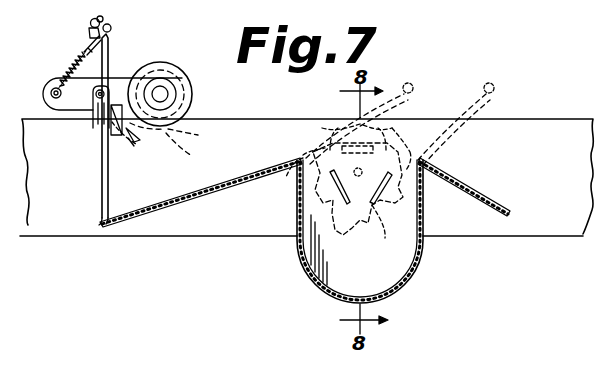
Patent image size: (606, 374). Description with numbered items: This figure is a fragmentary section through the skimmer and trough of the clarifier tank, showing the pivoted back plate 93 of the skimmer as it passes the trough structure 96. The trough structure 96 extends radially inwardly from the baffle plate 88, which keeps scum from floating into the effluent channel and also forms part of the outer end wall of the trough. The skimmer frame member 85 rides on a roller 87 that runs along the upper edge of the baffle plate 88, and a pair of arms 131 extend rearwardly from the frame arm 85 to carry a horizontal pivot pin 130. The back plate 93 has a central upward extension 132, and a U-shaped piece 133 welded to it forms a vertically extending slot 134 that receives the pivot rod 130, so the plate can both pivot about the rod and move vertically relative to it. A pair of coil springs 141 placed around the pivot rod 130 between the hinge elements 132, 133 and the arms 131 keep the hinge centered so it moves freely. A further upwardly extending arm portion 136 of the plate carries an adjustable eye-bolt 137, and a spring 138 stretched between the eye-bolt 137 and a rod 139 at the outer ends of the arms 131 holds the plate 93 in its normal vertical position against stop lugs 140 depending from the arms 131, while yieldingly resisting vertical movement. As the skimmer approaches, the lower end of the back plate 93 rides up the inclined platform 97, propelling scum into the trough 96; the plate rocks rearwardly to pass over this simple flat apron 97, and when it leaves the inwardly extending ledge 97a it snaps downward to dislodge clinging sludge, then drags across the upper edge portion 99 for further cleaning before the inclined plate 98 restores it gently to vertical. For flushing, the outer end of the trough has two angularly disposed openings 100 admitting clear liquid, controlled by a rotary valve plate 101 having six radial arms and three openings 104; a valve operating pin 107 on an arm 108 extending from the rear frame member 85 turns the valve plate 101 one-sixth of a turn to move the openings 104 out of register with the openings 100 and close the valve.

The radially extending member 85 is at (163, 86).
The roller 87 is at (145, 62).
The baffle plate 88 is at (242, 118).
The back plate 93 is at (109, 188).
The trough structure 96 is at (412, 285).
The inclined platform 97 is at (211, 200).
The inwardly extending ledge 97a is at (296, 182).
The inclined plate 98 is at (478, 198).
The upper edge portion 99 is at (426, 165).
The angularly disposed openings 100 is at (358, 192).
The rotary valve plate 101 is at (391, 212).
The openings 104 is at (378, 131).
The valve operating pin 107 is at (195, 151).
The arm 108 is at (182, 134).
The pivot pin 130 is at (94, 115).
The arms 131 is at (115, 78).
The upward extension 132 is at (132, 145).
The U-shaped piece 133 is at (96, 128).
The vertically extending slot 134 is at (100, 137).
The upwardly extending arm portion 136 is at (110, 38).
The eye-bolt 137 is at (90, 37).
The spring 138 is at (67, 70).
The rod 139 is at (46, 102).
The stop lugs 140 is at (140, 137).
The coil springs 141 is at (117, 106).